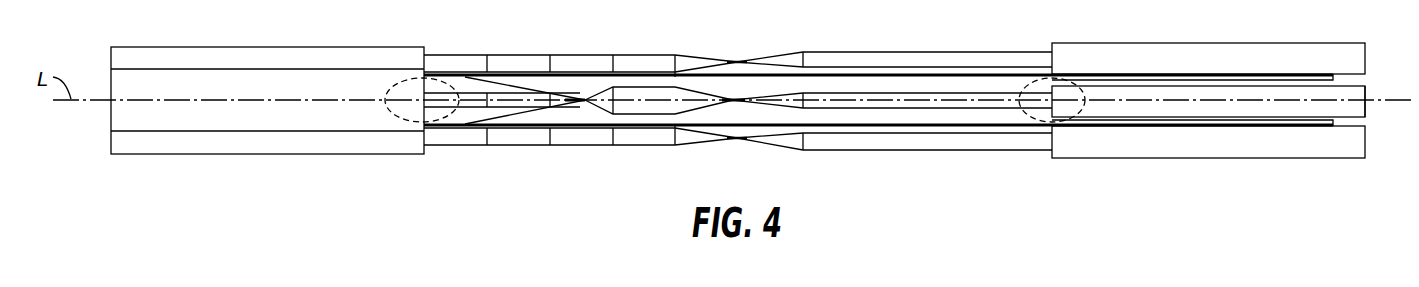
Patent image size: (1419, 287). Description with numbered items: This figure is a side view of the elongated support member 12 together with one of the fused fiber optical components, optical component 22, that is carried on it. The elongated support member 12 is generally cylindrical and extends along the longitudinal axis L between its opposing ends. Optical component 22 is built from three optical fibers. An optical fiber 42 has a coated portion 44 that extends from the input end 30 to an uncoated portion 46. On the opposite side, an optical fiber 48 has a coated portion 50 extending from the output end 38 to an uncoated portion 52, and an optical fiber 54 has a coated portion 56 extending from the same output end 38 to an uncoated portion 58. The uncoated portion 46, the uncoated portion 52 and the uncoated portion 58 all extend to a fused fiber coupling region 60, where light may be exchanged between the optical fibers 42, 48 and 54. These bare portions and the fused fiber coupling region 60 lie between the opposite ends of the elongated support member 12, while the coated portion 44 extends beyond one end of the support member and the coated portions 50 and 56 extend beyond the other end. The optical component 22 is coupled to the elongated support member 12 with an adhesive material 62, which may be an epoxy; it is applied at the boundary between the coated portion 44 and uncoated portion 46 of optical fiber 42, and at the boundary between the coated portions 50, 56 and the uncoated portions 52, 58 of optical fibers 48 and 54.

The elongated support member 12 is at (829, 86).
The optical component 22 is at (383, 62).
The input end 30 is at (1367, 92).
The output end 38 is at (232, 103).
The optical fiber 42 is at (943, 91).
The coated portion 44 is at (1182, 84).
The uncoated portion 46 is at (888, 93).
The optical fiber 48 is at (481, 74).
The coated portion 50 is at (234, 84).
The uncoated portion 52 is at (475, 87).
The optical fiber 54 is at (524, 105).
The coated portion 56 is at (234, 117).
The uncoated portion 58 is at (505, 119).
The fused fiber coupling region 60 is at (738, 77).
The adhesive material 62 is at (418, 76).